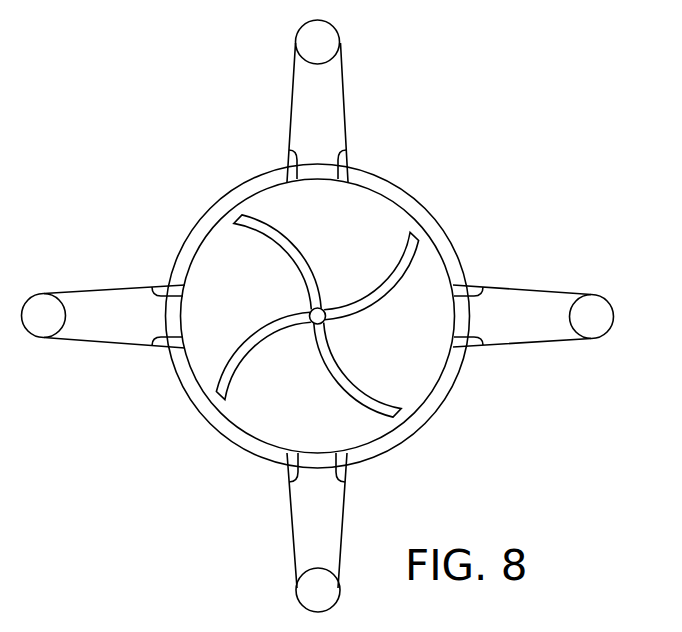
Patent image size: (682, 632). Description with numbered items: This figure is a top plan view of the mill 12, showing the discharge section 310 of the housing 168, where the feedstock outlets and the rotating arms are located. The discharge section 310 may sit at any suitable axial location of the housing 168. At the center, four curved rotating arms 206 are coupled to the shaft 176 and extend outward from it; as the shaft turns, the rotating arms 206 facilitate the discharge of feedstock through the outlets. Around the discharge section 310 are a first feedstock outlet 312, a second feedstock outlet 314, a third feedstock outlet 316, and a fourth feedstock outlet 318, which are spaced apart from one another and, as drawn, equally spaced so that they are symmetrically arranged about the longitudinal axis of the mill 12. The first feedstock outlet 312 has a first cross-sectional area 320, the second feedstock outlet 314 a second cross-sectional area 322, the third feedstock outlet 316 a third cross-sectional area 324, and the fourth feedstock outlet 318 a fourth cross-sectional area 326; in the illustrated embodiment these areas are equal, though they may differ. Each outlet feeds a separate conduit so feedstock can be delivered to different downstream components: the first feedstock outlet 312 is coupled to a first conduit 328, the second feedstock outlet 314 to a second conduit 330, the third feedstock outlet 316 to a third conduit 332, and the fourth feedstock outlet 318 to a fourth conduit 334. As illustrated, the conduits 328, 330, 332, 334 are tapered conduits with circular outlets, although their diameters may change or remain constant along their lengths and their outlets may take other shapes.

The mill 12 is at (125, 131).
The housing 168 is at (435, 220).
The shaft 176 is at (323, 308).
The rotating arms 206 is at (293, 247).
The discharge section 310 is at (426, 423).
The first feedstock outlet 312 is at (346, 150).
The second feedstock outlet 314 is at (151, 287).
The third feedstock outlet 316 is at (483, 287).
The fourth feedstock outlet 318 is at (345, 482).
The first cross-sectional area 320 is at (289, 150).
The second cross-sectional area 322 is at (151, 346).
The third cross-sectional area 324 is at (483, 345).
The fourth cross-sectional area 326 is at (289, 482).
The first conduit 328 is at (332, 90).
The second conduit 330 is at (92, 303).
The third conduit 332 is at (543, 328).
The fourth conduit 334 is at (303, 540).